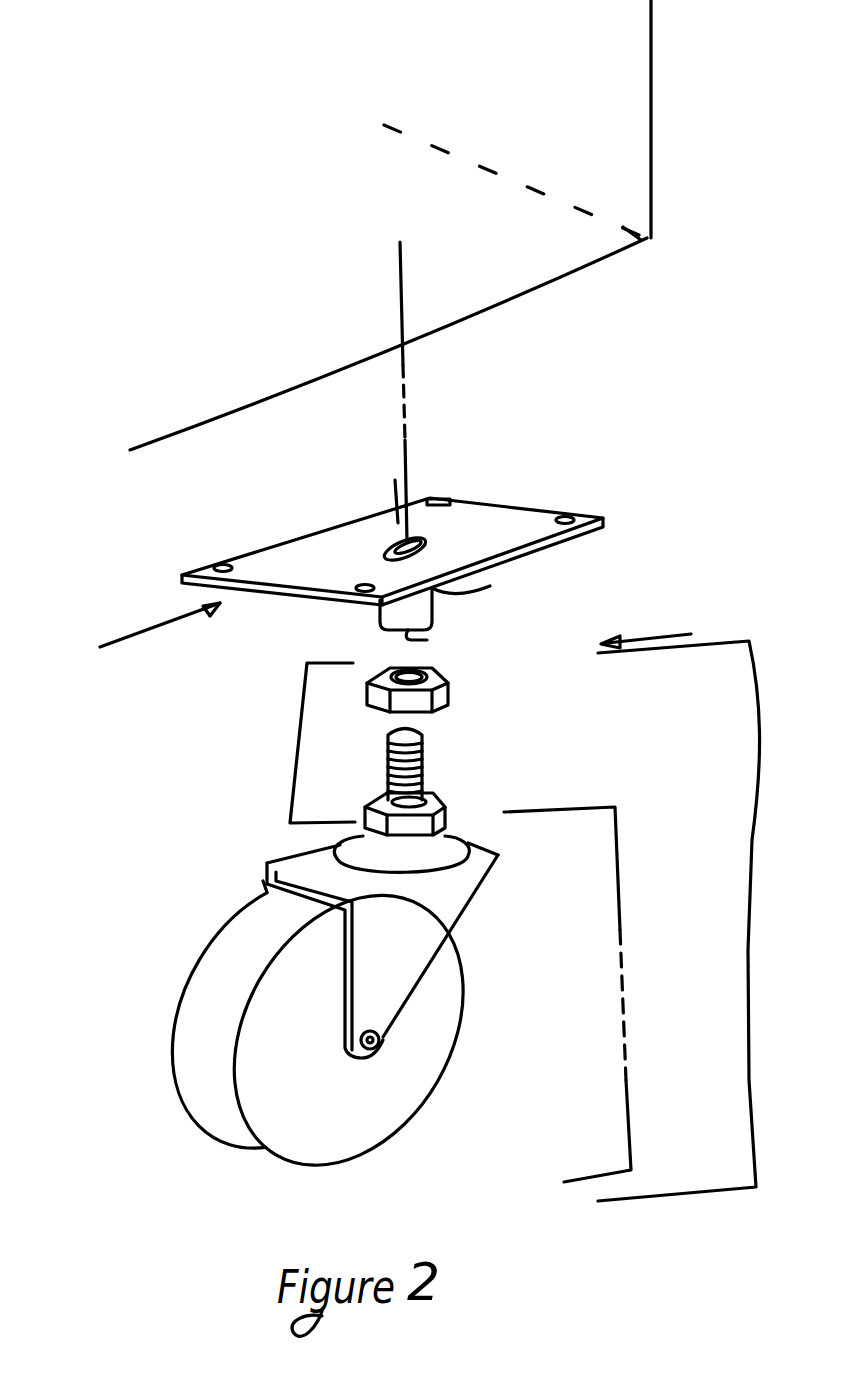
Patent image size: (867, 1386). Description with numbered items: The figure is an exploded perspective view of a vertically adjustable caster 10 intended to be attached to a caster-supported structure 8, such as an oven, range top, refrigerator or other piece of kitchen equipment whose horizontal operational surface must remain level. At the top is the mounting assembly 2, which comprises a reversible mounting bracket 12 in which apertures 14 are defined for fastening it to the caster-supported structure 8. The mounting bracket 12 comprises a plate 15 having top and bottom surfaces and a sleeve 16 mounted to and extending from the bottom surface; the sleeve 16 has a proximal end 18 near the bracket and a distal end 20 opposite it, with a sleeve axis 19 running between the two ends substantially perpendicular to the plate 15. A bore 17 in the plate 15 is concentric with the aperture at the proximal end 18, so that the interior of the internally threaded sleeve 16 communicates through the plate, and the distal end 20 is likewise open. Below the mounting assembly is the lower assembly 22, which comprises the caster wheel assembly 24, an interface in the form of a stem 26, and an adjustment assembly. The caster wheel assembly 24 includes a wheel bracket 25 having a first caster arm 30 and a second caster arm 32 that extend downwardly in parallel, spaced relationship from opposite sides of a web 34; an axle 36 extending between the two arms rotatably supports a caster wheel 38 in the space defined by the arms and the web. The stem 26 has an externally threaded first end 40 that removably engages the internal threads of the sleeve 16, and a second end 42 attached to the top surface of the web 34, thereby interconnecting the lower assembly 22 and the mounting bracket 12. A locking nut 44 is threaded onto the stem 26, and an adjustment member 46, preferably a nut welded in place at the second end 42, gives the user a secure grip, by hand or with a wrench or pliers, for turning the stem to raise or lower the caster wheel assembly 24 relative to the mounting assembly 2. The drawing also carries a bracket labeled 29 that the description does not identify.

The mounting assembly 2 is at (134, 646).
The caster-supported structure 8 is at (615, 168).
The caster 10 is at (672, 633).
The mounting bracket 12 is at (340, 547).
The apertures 14 is at (453, 495).
The plate 15 is at (403, 482).
The sleeve 16 is at (417, 612).
The bore 17 is at (427, 540).
The proximal end 18 is at (491, 582).
The sleeve axis 19 is at (412, 392).
The distal end 20 is at (430, 638).
The lower assembly 22 is at (754, 884).
The caster wheel assembly 24 is at (624, 977).
The wheel bracket 25 is at (463, 873).
The stem 26 is at (390, 767).
The fastener assembly 29 is at (293, 735).
The first caster arm 30 is at (265, 875).
The second caster arm 32 is at (447, 917).
The web 34 is at (308, 860).
The axle 36 is at (380, 1038).
The caster wheel 38 is at (207, 1033).
The first end 40 is at (417, 730).
The second end 42 is at (430, 792).
The locking nut 44 is at (440, 690).
The adjustment member 46 is at (447, 807).